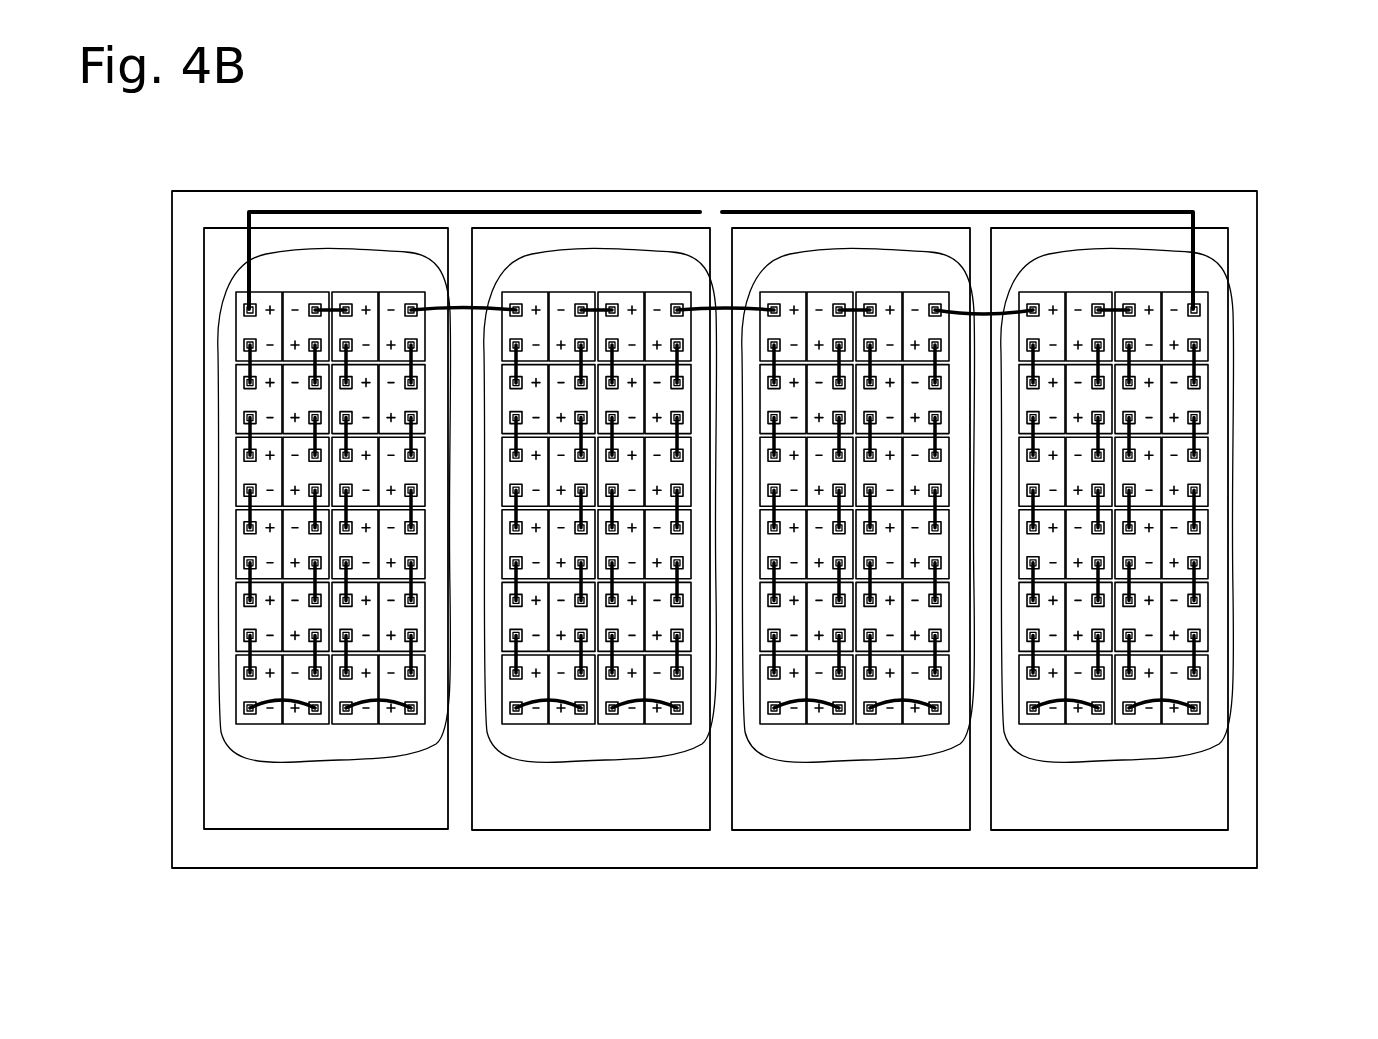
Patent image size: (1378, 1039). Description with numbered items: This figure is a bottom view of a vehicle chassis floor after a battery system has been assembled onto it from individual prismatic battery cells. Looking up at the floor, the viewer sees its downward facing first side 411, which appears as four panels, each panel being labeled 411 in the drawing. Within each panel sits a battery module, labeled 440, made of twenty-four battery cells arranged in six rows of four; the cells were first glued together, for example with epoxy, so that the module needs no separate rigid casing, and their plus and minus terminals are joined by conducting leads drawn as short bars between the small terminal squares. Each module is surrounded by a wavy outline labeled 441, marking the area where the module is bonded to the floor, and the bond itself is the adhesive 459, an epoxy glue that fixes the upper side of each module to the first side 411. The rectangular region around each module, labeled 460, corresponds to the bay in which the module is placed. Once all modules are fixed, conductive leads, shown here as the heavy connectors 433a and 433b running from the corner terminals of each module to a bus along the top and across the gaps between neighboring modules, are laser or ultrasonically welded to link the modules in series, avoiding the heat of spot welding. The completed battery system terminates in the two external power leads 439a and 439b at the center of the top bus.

The first side 411 is at (776, 802).
The first bus bar 433a is at (249, 309).
The second bus bar 433b is at (410, 305).
The external power lead 439a is at (699, 204).
The external power lead 439b is at (723, 204).
The solar cell array 440 is at (226, 526).
The array outline 441 is at (245, 687).
The adhesive 459 is at (285, 746).
The substrate panel 460 is at (185, 775).